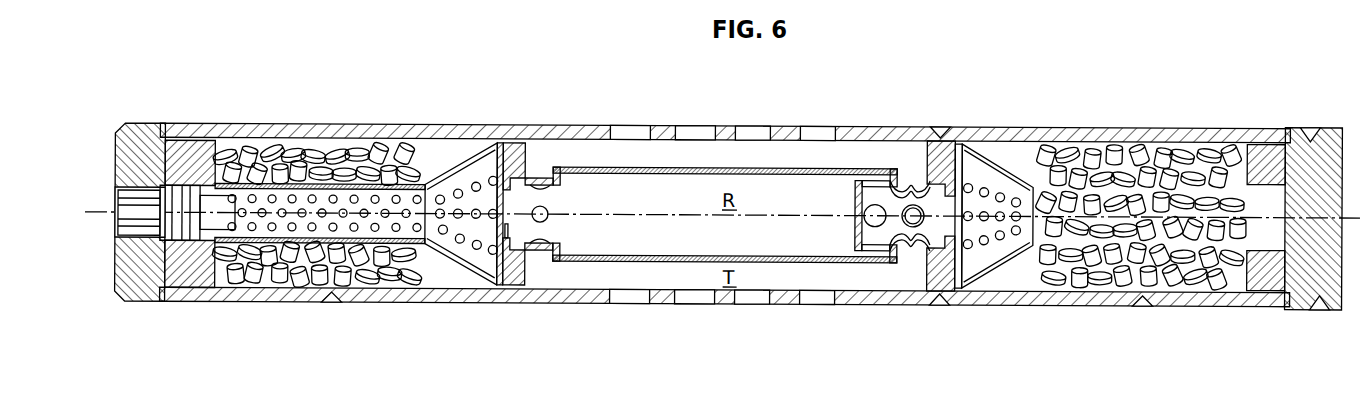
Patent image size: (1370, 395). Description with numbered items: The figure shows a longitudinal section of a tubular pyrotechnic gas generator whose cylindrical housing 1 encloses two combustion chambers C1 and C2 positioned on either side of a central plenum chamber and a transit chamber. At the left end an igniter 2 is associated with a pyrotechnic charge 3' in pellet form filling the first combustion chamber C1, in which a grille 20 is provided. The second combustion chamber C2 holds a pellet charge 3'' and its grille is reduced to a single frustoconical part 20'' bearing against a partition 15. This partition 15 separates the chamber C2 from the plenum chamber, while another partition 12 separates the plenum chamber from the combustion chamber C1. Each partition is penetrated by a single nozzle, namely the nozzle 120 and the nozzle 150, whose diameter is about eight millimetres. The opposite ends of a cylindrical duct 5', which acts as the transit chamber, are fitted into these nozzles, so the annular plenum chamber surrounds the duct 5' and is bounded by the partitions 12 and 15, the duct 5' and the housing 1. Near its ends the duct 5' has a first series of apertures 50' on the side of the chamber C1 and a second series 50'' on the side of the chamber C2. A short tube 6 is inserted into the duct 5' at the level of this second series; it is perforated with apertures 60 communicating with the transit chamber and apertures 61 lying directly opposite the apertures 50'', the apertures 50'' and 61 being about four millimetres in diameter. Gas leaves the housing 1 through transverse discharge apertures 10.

The tubular housing 1 is at (729, 170).
The igniter 2 is at (220, 203).
The pyrotechnic charge 3' is at (317, 183).
The pyrotechnic charge 3'' is at (1140, 189).
The grille 20 is at (329, 149).
The frustoconical part 20'' is at (1006, 185).
The partition 12 is at (517, 161).
The discharge apertures 10 is at (628, 129).
The cylindrical duct 5' is at (711, 172).
The first series of apertures 50' is at (556, 277).
The second series of apertures 50'' is at (905, 174).
The nozzle 150 is at (952, 196).
The nozzle 120 is at (493, 271).
The short tube 6 is at (853, 221).
The first series of apertures 60 is at (878, 238).
The second series of apertures 61 is at (915, 226).
The partition 15 is at (953, 286).
The first combustion chamber C1 is at (283, 273).
The second combustion chamber C2 is at (1172, 275).